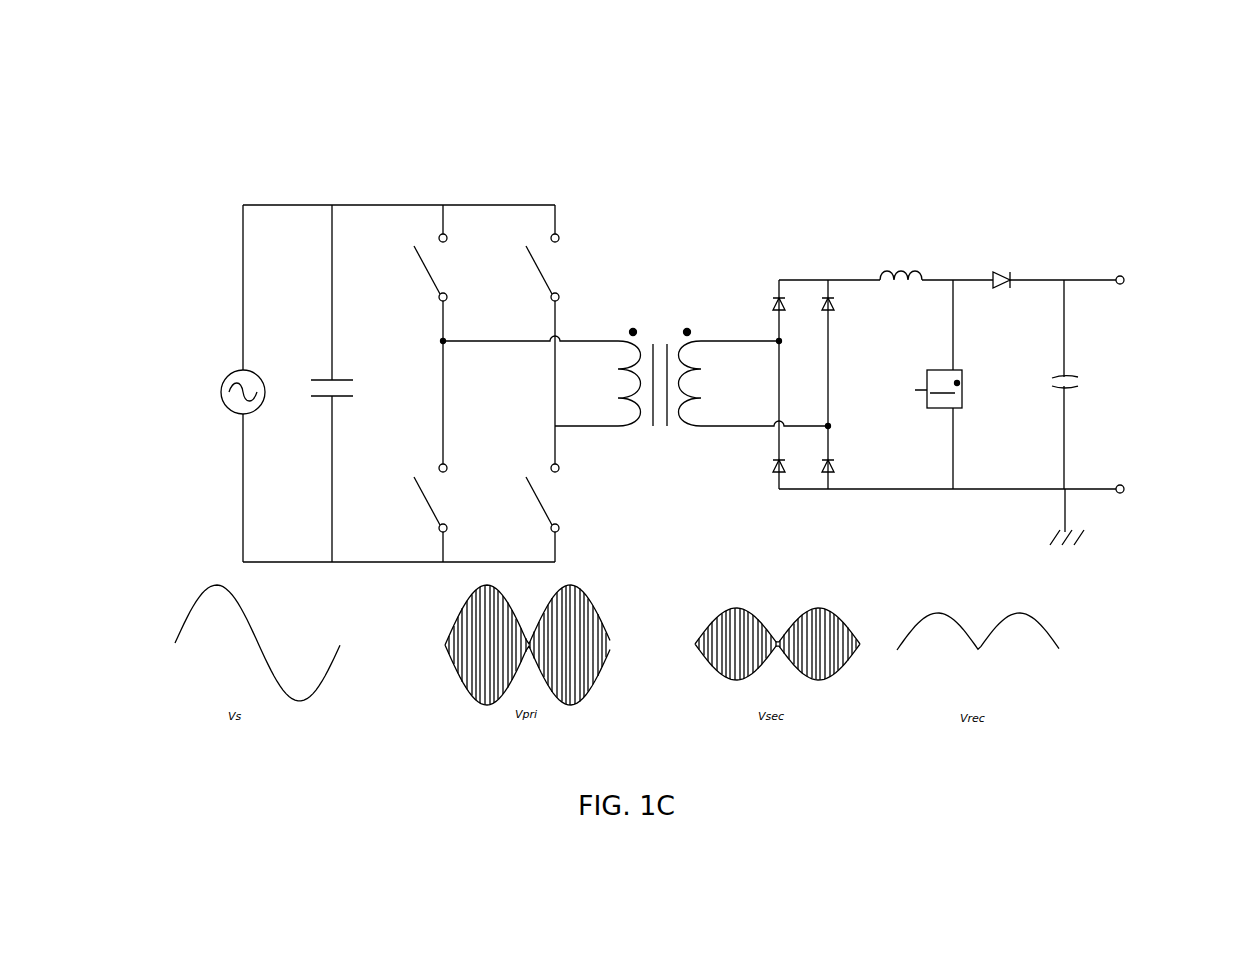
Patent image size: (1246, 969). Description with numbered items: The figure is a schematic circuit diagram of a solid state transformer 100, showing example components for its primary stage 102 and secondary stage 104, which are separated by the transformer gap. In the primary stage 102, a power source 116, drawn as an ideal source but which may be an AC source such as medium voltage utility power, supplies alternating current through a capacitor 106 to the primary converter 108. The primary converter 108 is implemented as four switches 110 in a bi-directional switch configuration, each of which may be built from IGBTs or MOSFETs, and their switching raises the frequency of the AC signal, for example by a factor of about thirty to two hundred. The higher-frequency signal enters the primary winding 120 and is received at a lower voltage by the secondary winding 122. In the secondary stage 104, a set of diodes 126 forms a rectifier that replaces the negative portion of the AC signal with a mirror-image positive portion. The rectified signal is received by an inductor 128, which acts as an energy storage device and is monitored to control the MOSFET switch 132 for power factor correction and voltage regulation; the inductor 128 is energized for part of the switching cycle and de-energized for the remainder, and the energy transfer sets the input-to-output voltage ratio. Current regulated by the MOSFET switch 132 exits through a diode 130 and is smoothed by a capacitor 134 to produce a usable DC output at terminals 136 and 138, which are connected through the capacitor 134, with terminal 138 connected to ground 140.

The solid state transformer 100 is at (188, 318).
The primary stage 102 is at (625, 182).
The secondary stage 104 is at (1242, 178).
The capacitor 106 is at (346, 381).
The primary converter 108 is at (575, 204).
The switches 110 is at (560, 498).
The power source 116 is at (238, 378).
The primary winding 120 is at (632, 330).
The secondary winding 122 is at (712, 335).
The diodes 126 is at (836, 470).
The inductor 128 is at (900, 278).
The diode 130 is at (1012, 272).
The MOSFET switch 132 is at (960, 370).
The capacitor 134 is at (1072, 380).
The terminal 136 is at (1130, 280).
The terminal 138 is at (1130, 489).
The ground 140 is at (1086, 530).